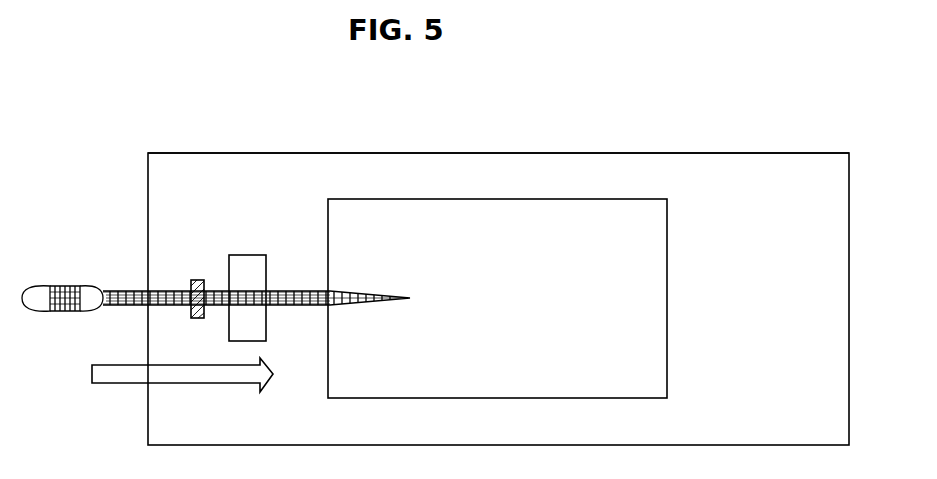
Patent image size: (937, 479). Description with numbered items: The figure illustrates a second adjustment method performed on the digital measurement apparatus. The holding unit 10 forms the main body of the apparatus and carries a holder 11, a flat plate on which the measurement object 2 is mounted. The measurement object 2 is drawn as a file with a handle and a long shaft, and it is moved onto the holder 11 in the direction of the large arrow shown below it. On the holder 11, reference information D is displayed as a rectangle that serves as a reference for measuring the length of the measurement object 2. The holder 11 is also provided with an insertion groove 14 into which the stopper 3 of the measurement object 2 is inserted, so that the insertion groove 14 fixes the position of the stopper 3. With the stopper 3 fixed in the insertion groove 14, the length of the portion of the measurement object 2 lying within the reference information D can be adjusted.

The measurement object 2 is at (166, 290).
The stopper 3 is at (197, 280).
The holding unit 10 is at (680, 152).
The holder 11 is at (498, 152).
The insertion groove 14 is at (248, 254).
The reference information D is at (668, 298).